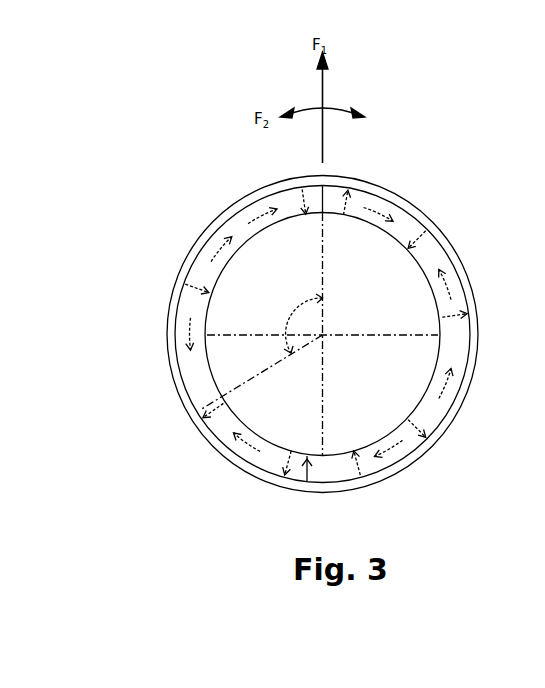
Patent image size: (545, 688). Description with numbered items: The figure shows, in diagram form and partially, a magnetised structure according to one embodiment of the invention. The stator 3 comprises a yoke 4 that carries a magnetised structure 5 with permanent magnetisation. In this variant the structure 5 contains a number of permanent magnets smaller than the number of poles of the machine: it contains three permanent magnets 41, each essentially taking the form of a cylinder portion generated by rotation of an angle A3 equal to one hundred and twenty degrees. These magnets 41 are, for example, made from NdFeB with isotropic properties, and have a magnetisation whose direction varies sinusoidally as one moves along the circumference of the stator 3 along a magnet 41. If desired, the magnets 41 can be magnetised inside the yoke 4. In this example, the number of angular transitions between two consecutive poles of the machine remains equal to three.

The stator 3 is at (417, 190).
The yoke 4 is at (436, 224).
The magnetised structure 5 is at (382, 241).
The permanent magnet 41 is at (231, 240).
The angle A3 is at (293, 323).